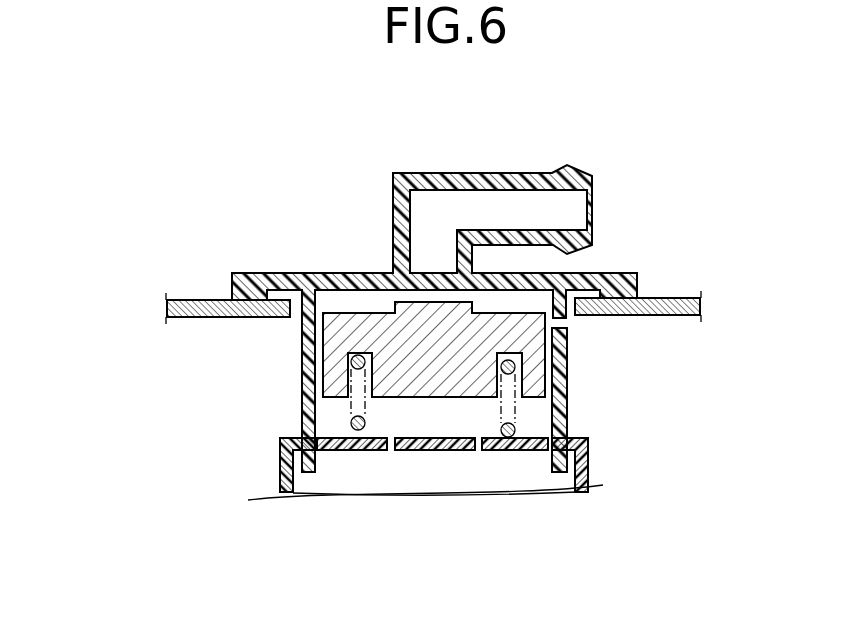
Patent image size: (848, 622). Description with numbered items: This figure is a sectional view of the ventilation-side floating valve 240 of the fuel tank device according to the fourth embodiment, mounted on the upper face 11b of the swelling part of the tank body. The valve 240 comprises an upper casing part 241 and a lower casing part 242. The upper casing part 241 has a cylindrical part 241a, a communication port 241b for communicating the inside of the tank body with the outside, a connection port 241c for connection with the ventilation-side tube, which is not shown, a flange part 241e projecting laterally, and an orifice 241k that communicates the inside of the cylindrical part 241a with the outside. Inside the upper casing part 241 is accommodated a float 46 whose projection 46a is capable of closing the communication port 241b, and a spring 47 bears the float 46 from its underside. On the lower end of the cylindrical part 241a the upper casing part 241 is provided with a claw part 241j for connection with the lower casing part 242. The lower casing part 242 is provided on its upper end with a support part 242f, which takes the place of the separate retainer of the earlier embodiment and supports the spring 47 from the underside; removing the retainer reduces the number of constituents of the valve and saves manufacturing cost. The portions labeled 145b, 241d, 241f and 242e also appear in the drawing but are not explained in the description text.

The connector portion 145b is at (122, 0).
The ventilation-side floating valve 240 is at (147, 352).
The upper casing part 241 is at (525, 173).
The cylindrical part 241a is at (300, 372).
The communication port 241b is at (435, 288).
The connection port 241c is at (593, 193).
The right side wall 241d is at (567, 377).
The flange part 241e is at (290, 273).
The flange 241f is at (230, 297).
The claw part 241j is at (558, 473).
The orifice 241k is at (560, 323).
The upper face of swelling part 11b is at (673, 297).
The float 46 is at (300, 343).
The projection 46a is at (393, 300).
The spring 47 is at (345, 421).
The lower casing part 242 is at (588, 468).
The opening 242e is at (388, 453).
The support part 242f is at (353, 452).